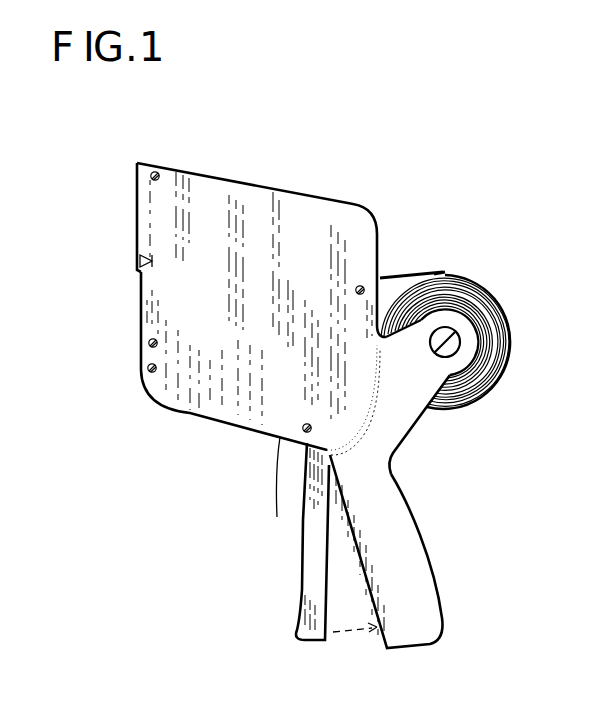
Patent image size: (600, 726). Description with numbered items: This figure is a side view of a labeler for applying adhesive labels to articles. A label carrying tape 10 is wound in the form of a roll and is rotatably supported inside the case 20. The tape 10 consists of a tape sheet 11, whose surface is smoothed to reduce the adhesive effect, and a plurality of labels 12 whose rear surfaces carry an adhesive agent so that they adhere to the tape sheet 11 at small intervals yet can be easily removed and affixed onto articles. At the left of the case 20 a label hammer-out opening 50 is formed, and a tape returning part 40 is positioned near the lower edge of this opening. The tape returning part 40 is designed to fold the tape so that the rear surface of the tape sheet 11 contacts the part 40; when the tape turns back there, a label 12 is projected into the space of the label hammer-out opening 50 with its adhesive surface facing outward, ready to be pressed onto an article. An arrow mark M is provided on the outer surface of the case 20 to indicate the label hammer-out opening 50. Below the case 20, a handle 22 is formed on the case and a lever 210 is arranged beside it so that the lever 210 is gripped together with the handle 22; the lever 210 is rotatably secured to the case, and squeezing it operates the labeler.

The label carrying tape 10 is at (493, 316).
The tape sheet 11 is at (438, 269).
The label 12 is at (405, 273).
The case 20 is at (399, 452).
The handle 22 is at (437, 577).
The lever 210 is at (310, 564).
The tape returning part 40 is at (139, 276).
The label hammer-out opening 50 is at (136, 213).
The arrow mark M is at (138, 258).